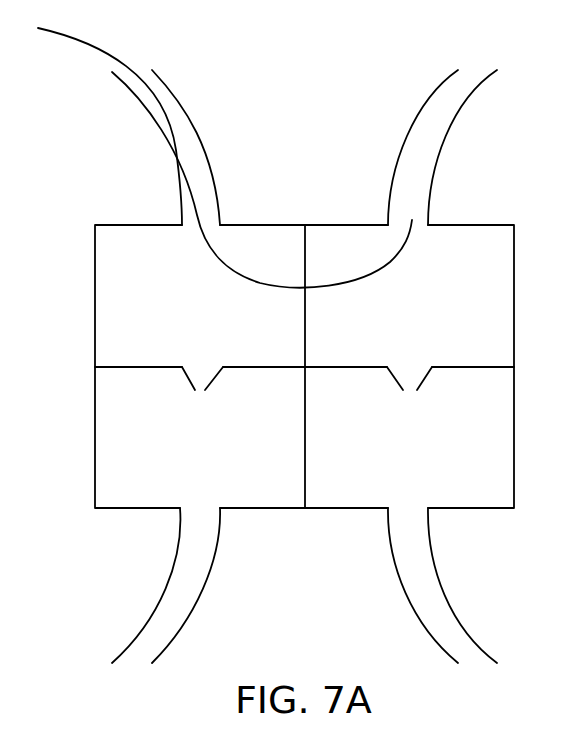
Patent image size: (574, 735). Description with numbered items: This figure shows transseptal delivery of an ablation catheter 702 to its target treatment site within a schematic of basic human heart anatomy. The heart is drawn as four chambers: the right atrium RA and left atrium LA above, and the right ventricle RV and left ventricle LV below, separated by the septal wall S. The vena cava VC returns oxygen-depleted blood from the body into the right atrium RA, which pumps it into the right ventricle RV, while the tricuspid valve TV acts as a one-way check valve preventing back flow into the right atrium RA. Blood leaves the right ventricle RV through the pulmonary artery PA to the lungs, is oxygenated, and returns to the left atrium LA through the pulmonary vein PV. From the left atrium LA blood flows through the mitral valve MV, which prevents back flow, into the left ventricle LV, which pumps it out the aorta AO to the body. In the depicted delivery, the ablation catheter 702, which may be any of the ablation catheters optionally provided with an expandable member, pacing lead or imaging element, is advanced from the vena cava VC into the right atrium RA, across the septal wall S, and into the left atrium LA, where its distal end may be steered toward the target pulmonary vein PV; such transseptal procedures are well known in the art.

The ablation catheter 702 is at (127, 62).
The vena cava VC is at (202, 130).
The pulmonary vein PV is at (433, 163).
The septal wall S is at (307, 250).
The right atrium RA is at (200, 296).
The left atrium LA is at (367, 296).
The tricuspid valve TV is at (212, 378).
The mitral valve MV is at (423, 378).
The right ventricle RV is at (200, 437).
The left ventricle LV is at (409, 437).
The pulmonary artery PA is at (218, 563).
The aorta AO is at (440, 583).